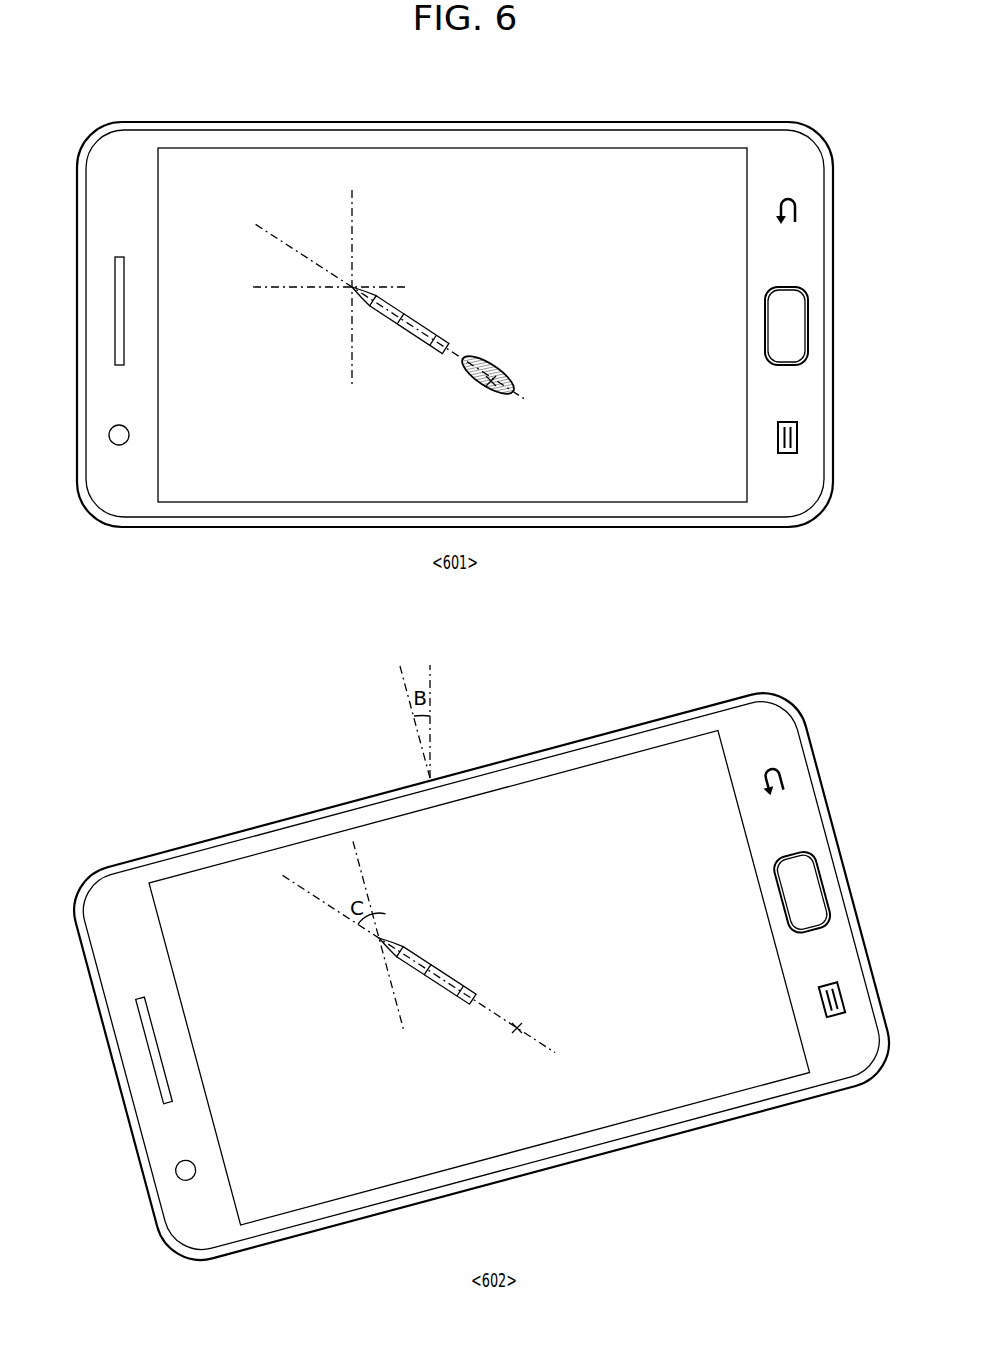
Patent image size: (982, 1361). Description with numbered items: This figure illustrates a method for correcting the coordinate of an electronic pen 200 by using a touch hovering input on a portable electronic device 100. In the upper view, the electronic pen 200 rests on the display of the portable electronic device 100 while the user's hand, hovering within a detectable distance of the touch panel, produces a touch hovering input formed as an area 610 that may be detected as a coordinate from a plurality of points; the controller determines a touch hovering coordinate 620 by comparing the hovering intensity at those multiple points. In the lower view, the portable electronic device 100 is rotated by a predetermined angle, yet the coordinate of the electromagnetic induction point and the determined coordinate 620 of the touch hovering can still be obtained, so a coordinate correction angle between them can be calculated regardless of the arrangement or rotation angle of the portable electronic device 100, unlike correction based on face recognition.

The portable electronic device 100 is at (690, 120).
The electronic pen 200 is at (433, 616).
The area 610 is at (500, 356).
The coordinate of the touch hovering 620 is at (496, 390).